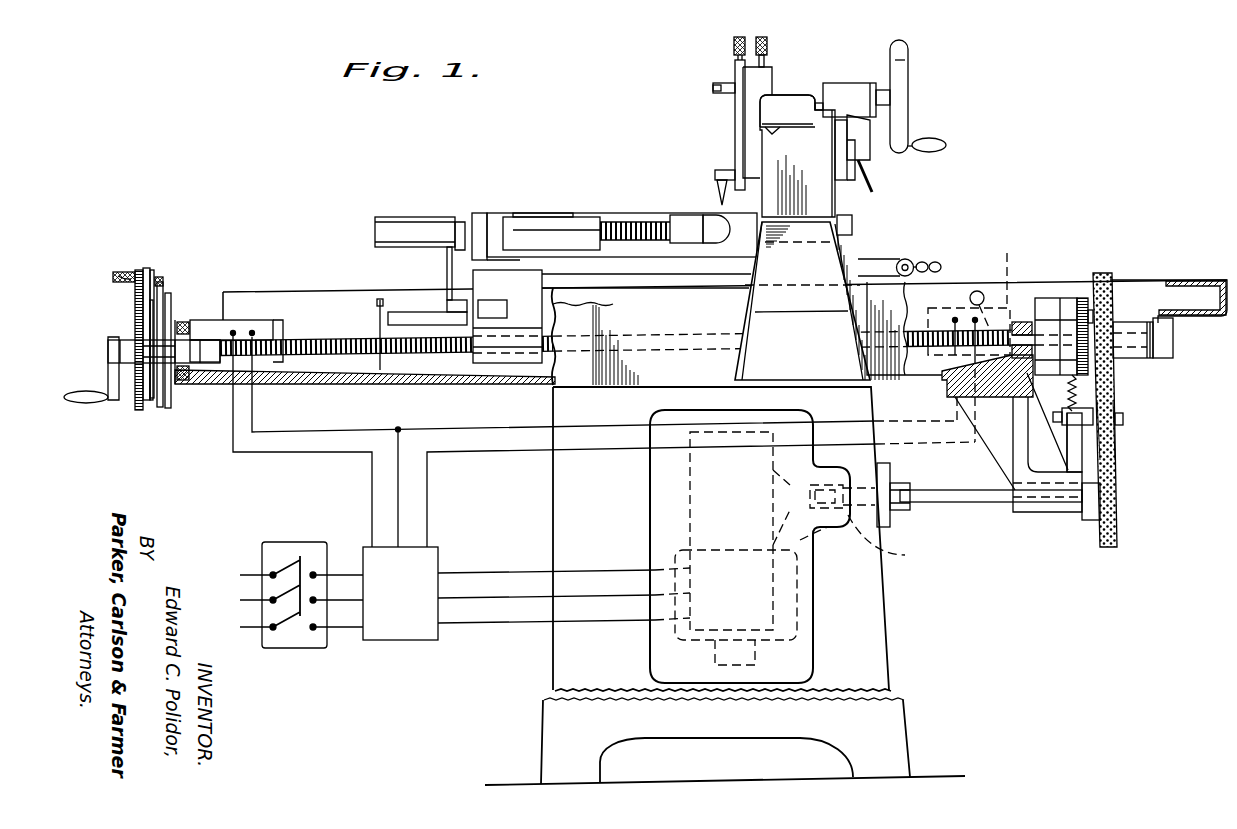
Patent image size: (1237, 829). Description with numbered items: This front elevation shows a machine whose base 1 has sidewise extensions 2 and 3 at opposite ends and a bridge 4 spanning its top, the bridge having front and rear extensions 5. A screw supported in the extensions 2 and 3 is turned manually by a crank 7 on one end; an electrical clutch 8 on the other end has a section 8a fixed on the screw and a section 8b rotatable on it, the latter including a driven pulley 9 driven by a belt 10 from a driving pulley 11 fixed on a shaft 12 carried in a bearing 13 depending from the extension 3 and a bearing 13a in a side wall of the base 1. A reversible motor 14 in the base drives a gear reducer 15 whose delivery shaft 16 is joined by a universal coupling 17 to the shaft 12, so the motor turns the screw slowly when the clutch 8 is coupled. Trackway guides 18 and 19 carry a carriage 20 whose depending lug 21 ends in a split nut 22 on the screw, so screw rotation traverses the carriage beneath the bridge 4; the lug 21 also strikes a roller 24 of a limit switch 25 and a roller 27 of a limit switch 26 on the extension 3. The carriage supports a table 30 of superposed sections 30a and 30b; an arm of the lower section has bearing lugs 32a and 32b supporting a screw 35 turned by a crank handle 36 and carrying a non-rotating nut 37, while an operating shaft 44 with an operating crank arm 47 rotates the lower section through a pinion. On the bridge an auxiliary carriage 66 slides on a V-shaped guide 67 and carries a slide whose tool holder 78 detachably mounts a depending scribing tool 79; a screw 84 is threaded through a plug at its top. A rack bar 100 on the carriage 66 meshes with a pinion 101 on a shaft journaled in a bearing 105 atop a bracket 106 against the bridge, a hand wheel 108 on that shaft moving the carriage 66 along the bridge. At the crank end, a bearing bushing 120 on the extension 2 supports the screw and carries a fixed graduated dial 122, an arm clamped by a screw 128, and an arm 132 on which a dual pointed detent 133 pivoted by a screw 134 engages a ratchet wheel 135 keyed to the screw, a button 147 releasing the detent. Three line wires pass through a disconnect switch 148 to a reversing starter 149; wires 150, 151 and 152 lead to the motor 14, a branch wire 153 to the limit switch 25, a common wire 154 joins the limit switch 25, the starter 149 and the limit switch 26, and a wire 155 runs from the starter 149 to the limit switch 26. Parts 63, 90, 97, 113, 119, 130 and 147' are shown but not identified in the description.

The base 1 is at (893, 710).
The sidewise extension 2 is at (320, 385).
The sidewise extension 3 is at (1165, 281).
The bridge 4 is at (797, 150).
The front and rear extensions 5 is at (822, 205).
The crank 7 is at (108, 375).
The electrical clutch 8 is at (1070, 296).
The clutch section 8a is at (1045, 298).
The clutch section 8b is at (1080, 373).
The driven pulley 9 is at (1103, 285).
The belt 10 is at (1108, 460).
The driving pulley 11 is at (1118, 520).
The shaft 12 is at (960, 506).
The bearing 13 is at (1045, 512).
The bearing 13a is at (893, 480).
The reversible motor 14 is at (798, 600).
The gear reducer 15 is at (690, 487).
The delivery shaft 16 is at (825, 535).
The universal coupling 17 is at (905, 555).
The trackway guide 18 is at (302, 291).
The trackway guide 19 is at (662, 290).
The carriage 20 is at (640, 225).
The depending lug or arm 21 is at (646, 299).
The split nut 22 is at (505, 365).
The roller 24 is at (237, 318).
The limit switch 25 is at (250, 320).
The limit switch 26 is at (1007, 262).
The roller 27 is at (983, 292).
The table 30 is at (432, 215).
The upper table section 30a is at (390, 222).
The lower table section 30b is at (383, 240).
The bearing lug 32a is at (682, 215).
The bearing lug 32b is at (480, 213).
The screw 35 is at (600, 213).
The crank handle 36 is at (447, 250).
The nut 37 is at (545, 225).
The operating shaft 44 is at (885, 259).
The operating crank arm 47 is at (932, 262).
The bracket 63 is at (410, 312).
The auxiliary carriage 66 is at (790, 95).
The guide 67 is at (768, 128).
The tool holder 78 is at (722, 172).
The scribing tool 79 is at (718, 195).
The screw 84 is at (766, 37).
The valve knob 90 is at (738, 37).
The fitting 97 is at (718, 84).
The rack bar 100 is at (847, 122).
The pinion 101 is at (826, 85).
The bearing 105 is at (878, 90).
The bracket 106 is at (855, 135).
The hand wheel 108 is at (908, 60).
The lever handle 113 is at (870, 158).
The lever 119 is at (872, 185).
The bearing bushing 120 is at (196, 358).
The dial 122 is at (171, 303).
The screw 128 is at (162, 278).
The plate 130 is at (163, 288).
The arm 132 is at (152, 270).
The dual pointed detent 133 is at (146, 268).
The screw 134 is at (117, 280).
The ratchet wheel 135 is at (135, 310).
The button 147 is at (103, 253).
The stop 147' is at (171, 371).
The control or disconnect switch 148 is at (283, 555).
The reversing starter 149 is at (380, 640).
The wire 150 is at (505, 573).
The wire 151 is at (518, 600).
The wire 152 is at (520, 625).
The branch wire 153 is at (235, 455).
The common circuit wire 154 is at (330, 433).
The wire 155 is at (460, 452).